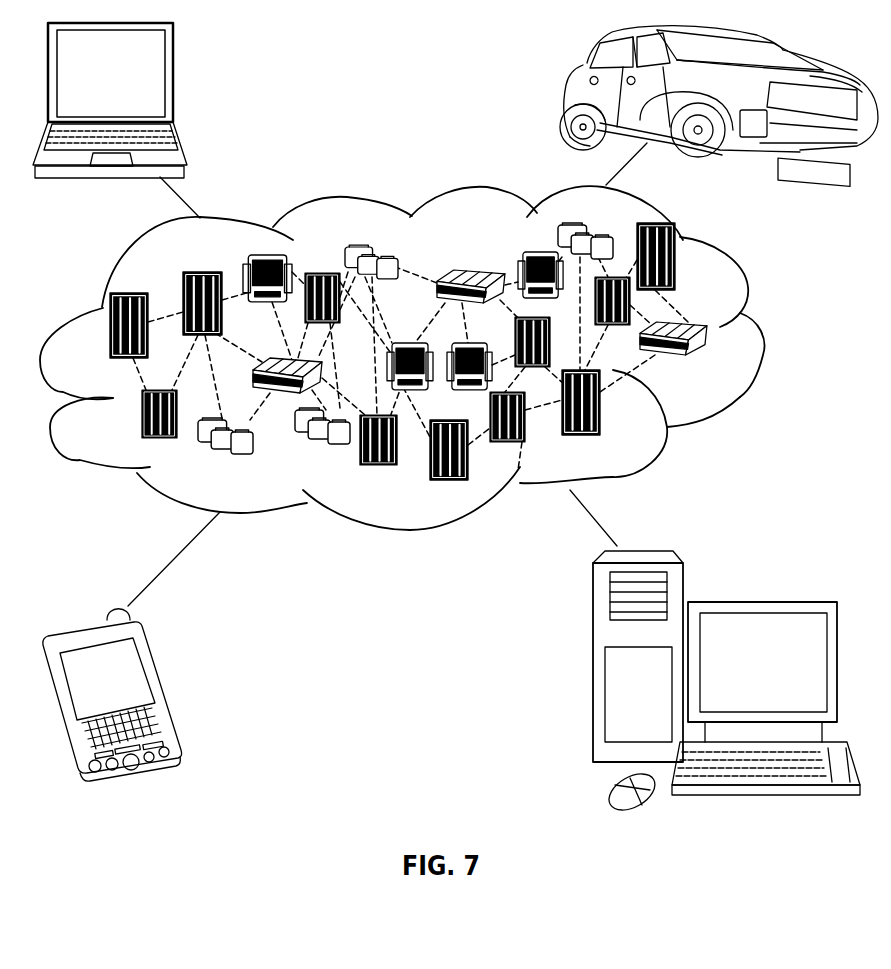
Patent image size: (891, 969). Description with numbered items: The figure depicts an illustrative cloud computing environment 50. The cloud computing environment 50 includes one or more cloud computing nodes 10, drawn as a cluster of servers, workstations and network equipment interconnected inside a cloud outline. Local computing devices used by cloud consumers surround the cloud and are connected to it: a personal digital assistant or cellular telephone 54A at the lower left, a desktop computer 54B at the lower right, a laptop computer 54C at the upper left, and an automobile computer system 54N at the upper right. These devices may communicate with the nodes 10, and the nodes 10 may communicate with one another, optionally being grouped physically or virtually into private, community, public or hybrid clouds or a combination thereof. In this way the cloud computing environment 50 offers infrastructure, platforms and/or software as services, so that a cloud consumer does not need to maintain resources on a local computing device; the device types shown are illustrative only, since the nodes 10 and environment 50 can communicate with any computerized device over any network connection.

The cloud computing nodes 10 is at (718, 365).
The cloud computing environment 50 is at (762, 335).
The personal digital assistant or cellular telephone 54A is at (163, 688).
The desktop computer 54B is at (762, 602).
The laptop computer 54C is at (173, 82).
The automobile computer system 54N is at (567, 98).